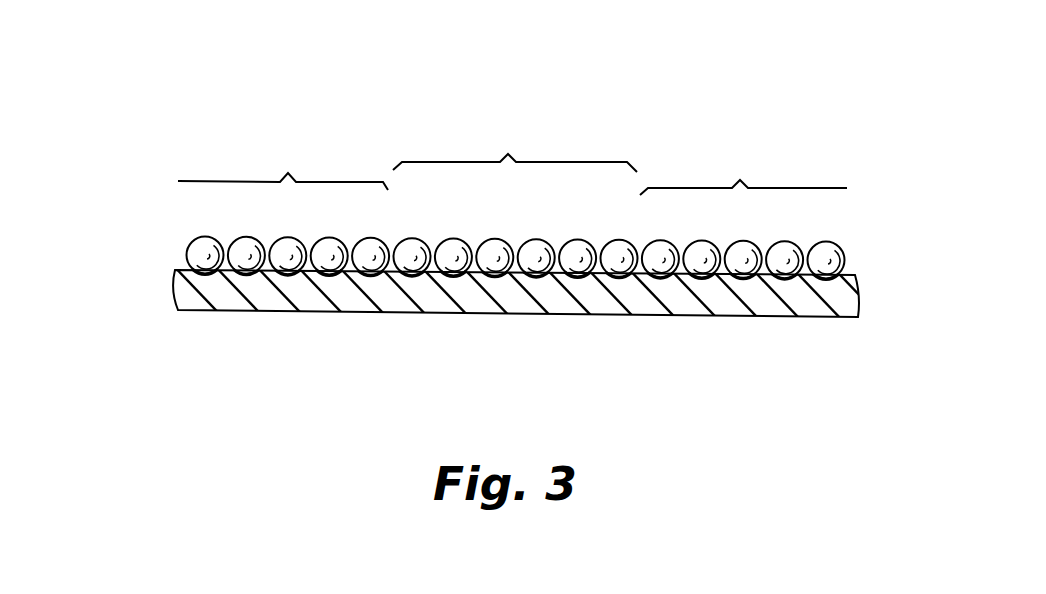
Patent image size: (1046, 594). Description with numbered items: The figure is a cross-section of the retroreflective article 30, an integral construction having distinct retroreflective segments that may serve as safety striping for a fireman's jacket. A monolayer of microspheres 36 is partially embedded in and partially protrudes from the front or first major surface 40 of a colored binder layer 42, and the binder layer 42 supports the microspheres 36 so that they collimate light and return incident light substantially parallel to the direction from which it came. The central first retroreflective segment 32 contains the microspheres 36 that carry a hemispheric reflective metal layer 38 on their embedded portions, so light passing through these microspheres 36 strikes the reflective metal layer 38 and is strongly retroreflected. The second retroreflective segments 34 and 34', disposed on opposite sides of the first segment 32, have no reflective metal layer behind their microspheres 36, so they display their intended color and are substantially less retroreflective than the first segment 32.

The retroreflective article 30 is at (673, 77).
The first retroreflective segment 32 is at (515, 147).
The second retroreflective segment 34 is at (283, 166).
The second retroreflective segment 34' is at (743, 171).
The microspheres 36 is at (210, 238).
The hemispheric reflective metal layer 38 is at (425, 278).
The first major surface 40 is at (856, 274).
The colored binder layer 42 is at (177, 270).